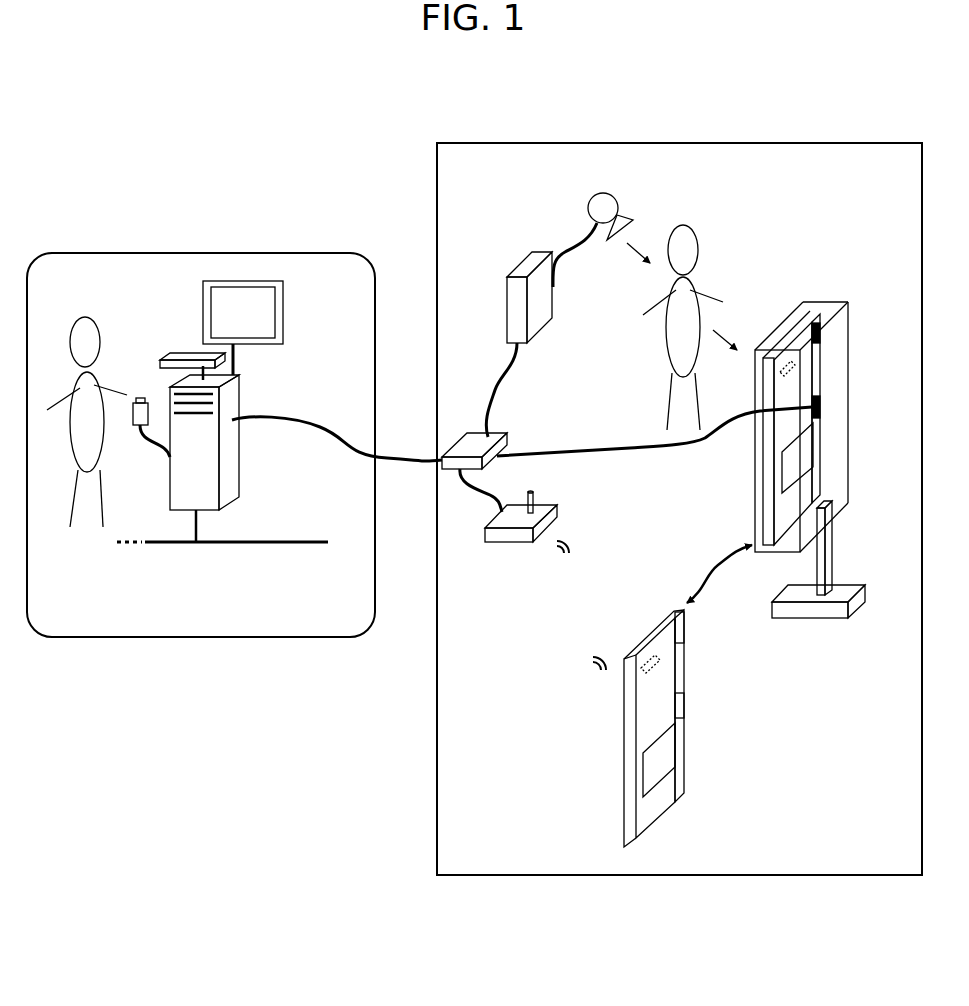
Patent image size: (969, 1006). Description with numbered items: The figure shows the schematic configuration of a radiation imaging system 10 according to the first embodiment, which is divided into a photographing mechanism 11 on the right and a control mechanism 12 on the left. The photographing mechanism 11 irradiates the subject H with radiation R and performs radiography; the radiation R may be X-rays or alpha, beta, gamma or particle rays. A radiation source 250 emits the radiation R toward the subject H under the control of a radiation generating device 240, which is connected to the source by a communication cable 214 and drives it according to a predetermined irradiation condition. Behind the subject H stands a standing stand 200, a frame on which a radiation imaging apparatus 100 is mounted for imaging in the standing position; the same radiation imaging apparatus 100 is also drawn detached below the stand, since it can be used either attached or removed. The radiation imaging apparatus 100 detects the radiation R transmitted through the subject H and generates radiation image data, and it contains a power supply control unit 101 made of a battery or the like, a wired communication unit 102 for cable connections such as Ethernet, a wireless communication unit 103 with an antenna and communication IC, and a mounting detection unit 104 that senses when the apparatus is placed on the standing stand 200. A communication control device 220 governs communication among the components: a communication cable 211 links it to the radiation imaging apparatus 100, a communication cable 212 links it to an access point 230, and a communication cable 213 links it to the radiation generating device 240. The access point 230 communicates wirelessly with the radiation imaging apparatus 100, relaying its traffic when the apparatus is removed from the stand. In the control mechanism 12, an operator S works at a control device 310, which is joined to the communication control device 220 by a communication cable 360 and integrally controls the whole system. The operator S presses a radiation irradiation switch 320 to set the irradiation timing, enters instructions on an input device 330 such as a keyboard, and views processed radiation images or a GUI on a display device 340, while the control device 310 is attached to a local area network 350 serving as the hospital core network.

The radiation imaging system 10 is at (161, 170).
The photographing mechanism 11 is at (768, 143).
The control mechanism 12 is at (333, 253).
The radiation imaging apparatus 100 is at (732, 580).
The power supply control unit 101 is at (667, 752).
The wired communication unit 102 is at (682, 707).
The wireless communication unit 103 is at (640, 668).
The mounting detection unit 104 is at (685, 623).
The standing stand 200 is at (828, 307).
The communication cable 211 is at (567, 448).
The communication cable 212 is at (500, 495).
The communication cable 213 is at (503, 373).
The communication cable 214 is at (573, 243).
The communication control device 220 is at (470, 427).
The access point 230 is at (547, 503).
The radiation generating device 240 is at (530, 252).
The radiation source 250 is at (600, 195).
The control device 310 is at (233, 410).
The radiation irradiation switch 320 is at (142, 398).
The input device 330 is at (180, 353).
The display device 340 is at (282, 317).
The local area network 350 is at (258, 537).
The communication cable 360 is at (400, 463).
The operator S is at (82, 318).
The subject H is at (685, 227).
The radiation R is at (632, 251).